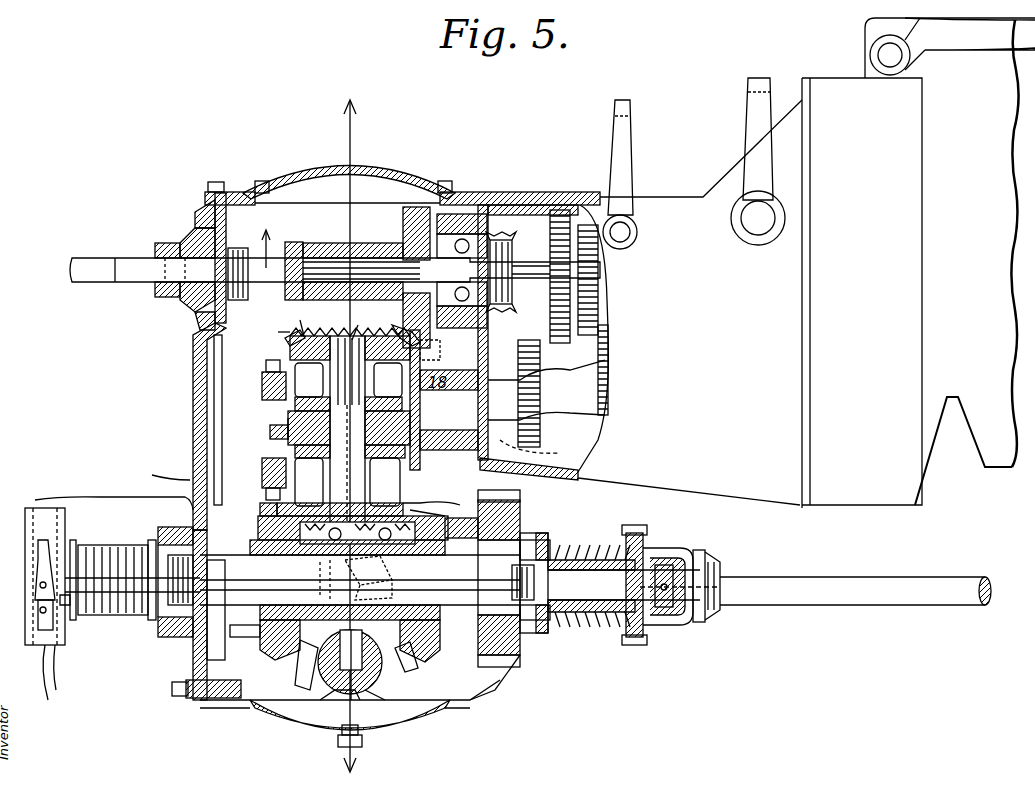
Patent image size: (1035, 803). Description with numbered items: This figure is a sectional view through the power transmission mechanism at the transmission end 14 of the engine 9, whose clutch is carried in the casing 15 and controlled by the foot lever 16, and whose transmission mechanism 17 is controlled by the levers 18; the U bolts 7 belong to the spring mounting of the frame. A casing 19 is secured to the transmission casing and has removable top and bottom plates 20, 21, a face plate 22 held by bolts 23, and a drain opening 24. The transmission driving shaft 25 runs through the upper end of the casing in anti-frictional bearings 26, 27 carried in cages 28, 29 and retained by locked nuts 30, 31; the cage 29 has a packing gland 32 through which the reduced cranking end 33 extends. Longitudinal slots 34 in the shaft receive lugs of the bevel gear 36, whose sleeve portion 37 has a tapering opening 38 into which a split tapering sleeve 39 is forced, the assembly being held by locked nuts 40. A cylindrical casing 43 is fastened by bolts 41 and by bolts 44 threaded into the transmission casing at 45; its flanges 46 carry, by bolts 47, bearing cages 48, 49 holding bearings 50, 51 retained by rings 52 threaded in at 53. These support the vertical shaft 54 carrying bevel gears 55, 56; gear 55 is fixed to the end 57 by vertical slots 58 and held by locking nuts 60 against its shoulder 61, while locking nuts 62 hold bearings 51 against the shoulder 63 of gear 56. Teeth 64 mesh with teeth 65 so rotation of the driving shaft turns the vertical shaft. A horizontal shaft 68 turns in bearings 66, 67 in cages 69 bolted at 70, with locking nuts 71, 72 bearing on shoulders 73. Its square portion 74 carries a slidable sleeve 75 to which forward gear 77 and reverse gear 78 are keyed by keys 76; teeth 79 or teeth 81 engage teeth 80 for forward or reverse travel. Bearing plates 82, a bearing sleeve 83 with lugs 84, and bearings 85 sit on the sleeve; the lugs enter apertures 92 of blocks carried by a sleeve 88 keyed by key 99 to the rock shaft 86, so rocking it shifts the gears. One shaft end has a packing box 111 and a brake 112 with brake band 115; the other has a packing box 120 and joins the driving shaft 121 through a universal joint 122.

The U bolts 7 is at (351, 437).
The engine 9 is at (967, 262).
The transmission end 14 is at (641, 302).
The casing 15 is at (918, 263).
The foot lever 16 is at (752, 122).
The transmission mechanism 17 is at (598, 283).
The levers 18 is at (625, 162).
The casing 19 is at (360, 200).
The top removable plate 20 is at (345, 172).
The bottom removable plate 21 is at (290, 730).
The face plate 22 is at (193, 380).
The bolts 23 is at (214, 182).
The opening 24 is at (365, 740).
The transmission driving shaft 25 is at (532, 262).
The anti-frictional bearing 26 is at (500, 200).
The anti-frictional bearing 27 is at (200, 212).
The bearing cage 28 is at (470, 214).
The bearing cage 29 is at (186, 240).
The locked nut 30 is at (500, 242).
The locked nut 31 is at (240, 248).
The packing gland 32 is at (168, 300).
The reduced cranking end 33 is at (108, 284).
The longitudinal slots 34 is at (385, 260).
The bevel gear 36 is at (418, 207).
The sleeve portion 37 is at (356, 243).
The tapering opening 38 is at (328, 258).
The split tapering sleeve 39 is at (350, 334).
The locked nuts 40 is at (294, 242).
The bolts 41 is at (438, 428).
The cylindrical casing 43 is at (285, 438).
The bolts 44 is at (270, 433).
The threaded point 45 is at (578, 445).
The flanges 46 is at (266, 398).
The bolts 47 is at (268, 372).
The anti-frictional bearing cage 48 is at (285, 340).
The anti-frictional bearing cage 49 is at (169, 471).
The anti-frictional bearings 50 is at (312, 387).
The anti-frictional bearings 51 is at (309, 482).
The retaining rings 52 is at (347, 433).
The threaded point 53 is at (288, 420).
The vertical shaft 54 is at (312, 470).
The bevel gear 55 is at (280, 320).
The bevel gear 56 is at (427, 508).
The end 57 is at (353, 324).
The vertical slots 58 is at (396, 327).
The locking nuts 60 is at (383, 387).
The shoulder 61 is at (430, 353).
The locking nuts 62 is at (385, 475).
The shoulder 63 is at (431, 494).
The teeth 64 is at (303, 322).
The teeth 65 is at (488, 338).
The anti-frictional bearing 66 is at (193, 635).
The anti-frictional bearing 67 is at (530, 640).
The horizontal shaft 68 is at (489, 577).
The bearing cages 69 is at (158, 630).
The bolts 70 is at (375, 591).
The locking nut 71 is at (193, 569).
The locking nut 72 is at (535, 540).
The shoulders 73 is at (215, 565).
The square portion 74 is at (360, 590).
The sleeve 75 is at (285, 548).
The keys 76 is at (420, 548).
The forward gear 77 is at (262, 543).
The reverse gear 78 is at (461, 521).
The teeth 79 is at (258, 524).
The teeth 80 is at (405, 515).
The teeth 81 is at (376, 542).
The anti-frictional bearing plates 82 is at (350, 646).
The anti-frictional bearing sleeve 83 is at (375, 665).
The lugs 84 is at (381, 578).
The anti-frictional bearings 85 is at (349, 665).
The rock shaft 86 is at (375, 708).
The sleeve 88 is at (305, 612).
The apertures 92 is at (394, 591).
The key 99 is at (350, 669).
The spring actuated packing box 111 is at (105, 620).
The brake 112 is at (109, 598).
The brake band 115 is at (60, 690).
The spring actuated packing box 120 is at (585, 625).
The driving shaft 121 is at (852, 604).
The universal joint 122 is at (686, 615).